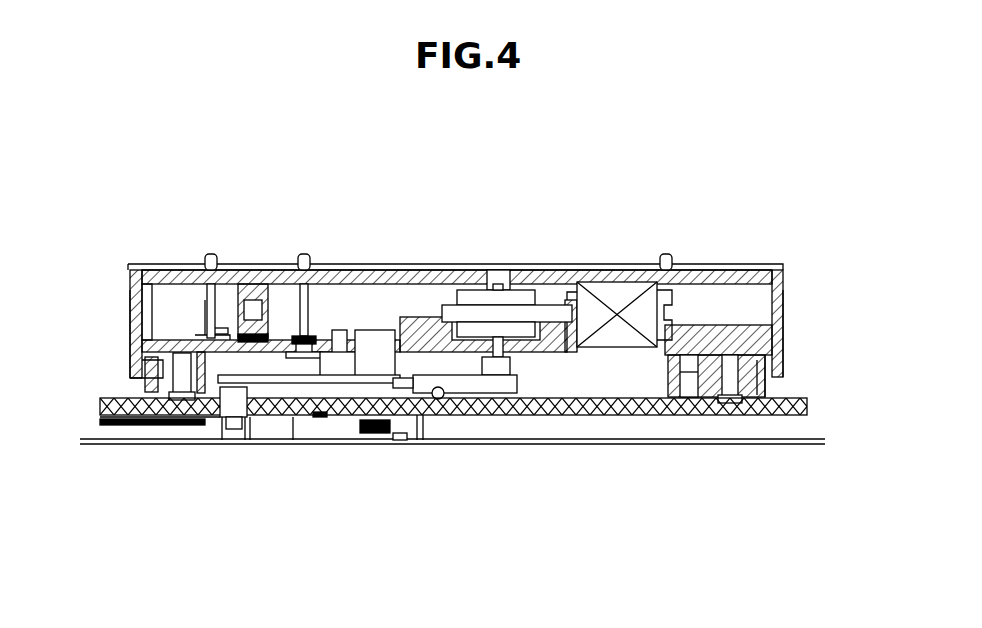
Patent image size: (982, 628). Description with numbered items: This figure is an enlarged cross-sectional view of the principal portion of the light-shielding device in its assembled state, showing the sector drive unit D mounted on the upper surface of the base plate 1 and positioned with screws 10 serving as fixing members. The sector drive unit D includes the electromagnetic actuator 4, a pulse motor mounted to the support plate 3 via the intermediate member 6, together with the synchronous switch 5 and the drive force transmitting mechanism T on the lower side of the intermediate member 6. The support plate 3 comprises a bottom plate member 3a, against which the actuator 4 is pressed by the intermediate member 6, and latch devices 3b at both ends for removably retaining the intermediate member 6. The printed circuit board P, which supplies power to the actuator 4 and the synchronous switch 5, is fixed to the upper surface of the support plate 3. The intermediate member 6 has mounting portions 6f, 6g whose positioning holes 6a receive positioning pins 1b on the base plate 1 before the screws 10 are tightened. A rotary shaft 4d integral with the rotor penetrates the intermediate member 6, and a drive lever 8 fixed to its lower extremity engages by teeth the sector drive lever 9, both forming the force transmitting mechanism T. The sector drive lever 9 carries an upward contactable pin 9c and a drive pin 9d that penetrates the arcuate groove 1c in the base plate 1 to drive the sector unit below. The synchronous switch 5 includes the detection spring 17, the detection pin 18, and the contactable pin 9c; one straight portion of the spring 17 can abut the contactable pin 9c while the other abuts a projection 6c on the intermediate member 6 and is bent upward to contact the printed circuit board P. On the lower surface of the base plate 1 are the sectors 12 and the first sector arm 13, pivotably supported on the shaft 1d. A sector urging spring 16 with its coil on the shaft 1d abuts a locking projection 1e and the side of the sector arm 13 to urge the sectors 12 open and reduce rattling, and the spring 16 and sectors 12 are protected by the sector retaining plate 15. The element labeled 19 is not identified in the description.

The base plate 1 is at (593, 418).
The positioning pin 1b is at (680, 415).
The arcuate groove 1c is at (253, 445).
The shaft 1d is at (368, 435).
The locking projection 1e is at (422, 430).
The support plate 3 is at (410, 262).
The bottom plate member 3a is at (370, 268).
The latch device 3b is at (130, 320).
The electromagnetic actuator 4 is at (475, 262).
The rotary shaft 4d is at (537, 385).
The synchronous switch 5 is at (320, 204).
The intermediate member 6 is at (172, 330).
The positioning hole 6a is at (688, 382).
The projection 6c is at (200, 330).
The mounting portion 6f is at (765, 375).
The mounting portion 6g is at (150, 352).
The drive lever 8 is at (497, 412).
The sector drive lever 9 is at (293, 445).
The contactable pin 9c is at (342, 328).
The drive pin 9d is at (230, 430).
The screw 10 is at (727, 417).
The sector 12 is at (105, 428).
The first sector arm 13 is at (215, 430).
The sector retaining plate 15 is at (563, 447).
The sector urging spring 16 is at (400, 442).
The detection spring 17 is at (230, 262).
The detection pin 18 is at (328, 262).
The roller 19 is at (297, 397).
The sector drive unit D is at (536, 262).
The printed circuit board P is at (722, 262).
The drive force transmitting mechanism T is at (452, 556).